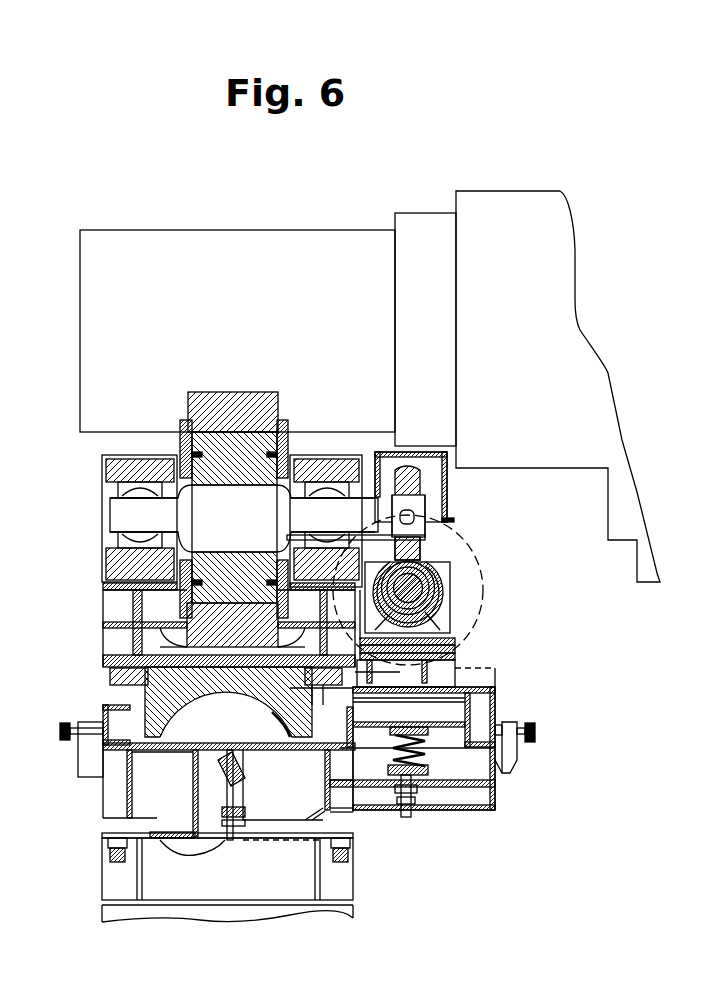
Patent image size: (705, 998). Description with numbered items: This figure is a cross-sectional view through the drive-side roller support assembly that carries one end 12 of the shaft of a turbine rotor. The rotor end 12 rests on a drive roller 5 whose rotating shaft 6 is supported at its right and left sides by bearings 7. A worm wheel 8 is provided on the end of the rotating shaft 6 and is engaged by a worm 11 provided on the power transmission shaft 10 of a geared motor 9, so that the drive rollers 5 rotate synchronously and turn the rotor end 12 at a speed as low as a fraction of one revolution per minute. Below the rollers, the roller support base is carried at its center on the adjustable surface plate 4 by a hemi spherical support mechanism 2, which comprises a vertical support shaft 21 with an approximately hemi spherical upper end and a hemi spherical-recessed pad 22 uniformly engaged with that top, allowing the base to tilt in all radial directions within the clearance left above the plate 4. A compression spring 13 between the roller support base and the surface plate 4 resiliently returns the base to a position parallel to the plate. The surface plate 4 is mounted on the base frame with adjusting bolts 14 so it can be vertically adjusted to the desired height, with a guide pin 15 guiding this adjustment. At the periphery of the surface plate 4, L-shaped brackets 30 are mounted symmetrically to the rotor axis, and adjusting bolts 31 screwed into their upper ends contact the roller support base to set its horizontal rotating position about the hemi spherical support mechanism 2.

The hemi spherical support mechanism 2 is at (272, 715).
The adjustable surface plate 4 is at (113, 798).
The drive roller 5 is at (228, 392).
The rotating shaft 6 is at (236, 535).
The bearing 7 is at (127, 452).
The worm wheel 8 is at (420, 490).
The geared motor 9 is at (478, 557).
The power transmission shaft 10 is at (425, 598).
The worm 11 is at (425, 589).
The one end of the shaft of the turbine rotor 12 is at (293, 230).
The compression spring 13 is at (410, 753).
The adjusting bolt 14 is at (110, 856).
The guide pin 15 is at (242, 840).
The vertical support shaft 21 is at (215, 768).
The hemi spherical-recessed pad 22 is at (150, 688).
The L-shaped bracket 30 is at (98, 760).
The adjusting bolt 31 is at (62, 733).